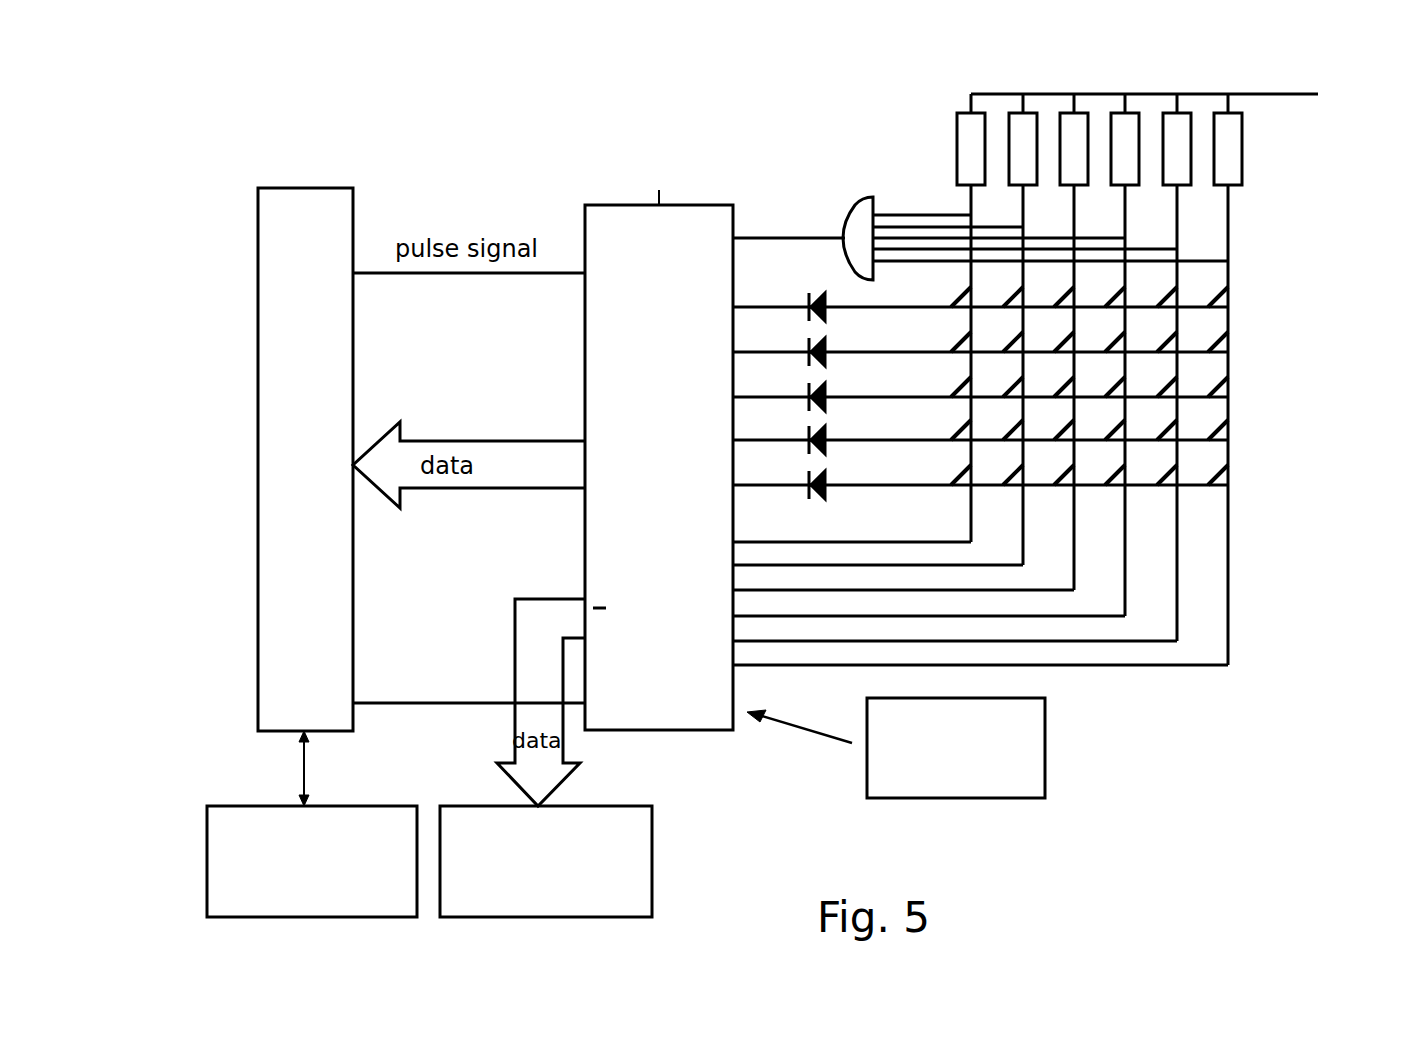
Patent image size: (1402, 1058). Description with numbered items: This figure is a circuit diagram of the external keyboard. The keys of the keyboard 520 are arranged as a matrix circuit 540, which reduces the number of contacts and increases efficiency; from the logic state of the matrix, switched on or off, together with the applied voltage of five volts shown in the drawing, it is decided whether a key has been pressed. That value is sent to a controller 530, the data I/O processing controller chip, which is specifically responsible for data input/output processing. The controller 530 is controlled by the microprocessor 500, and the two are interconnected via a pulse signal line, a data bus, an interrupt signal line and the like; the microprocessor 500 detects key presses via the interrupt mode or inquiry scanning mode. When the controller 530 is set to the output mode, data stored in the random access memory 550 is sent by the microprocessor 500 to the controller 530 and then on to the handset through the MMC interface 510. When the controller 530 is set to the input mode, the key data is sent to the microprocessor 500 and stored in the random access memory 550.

The microprocessor 500 is at (305, 188).
The MMC interface 510 is at (652, 865).
The keyboard 520 is at (1047, 749).
The controller 530 is at (711, 205).
The matrix circuit 540 is at (1230, 360).
The random access memory 550 is at (207, 865).